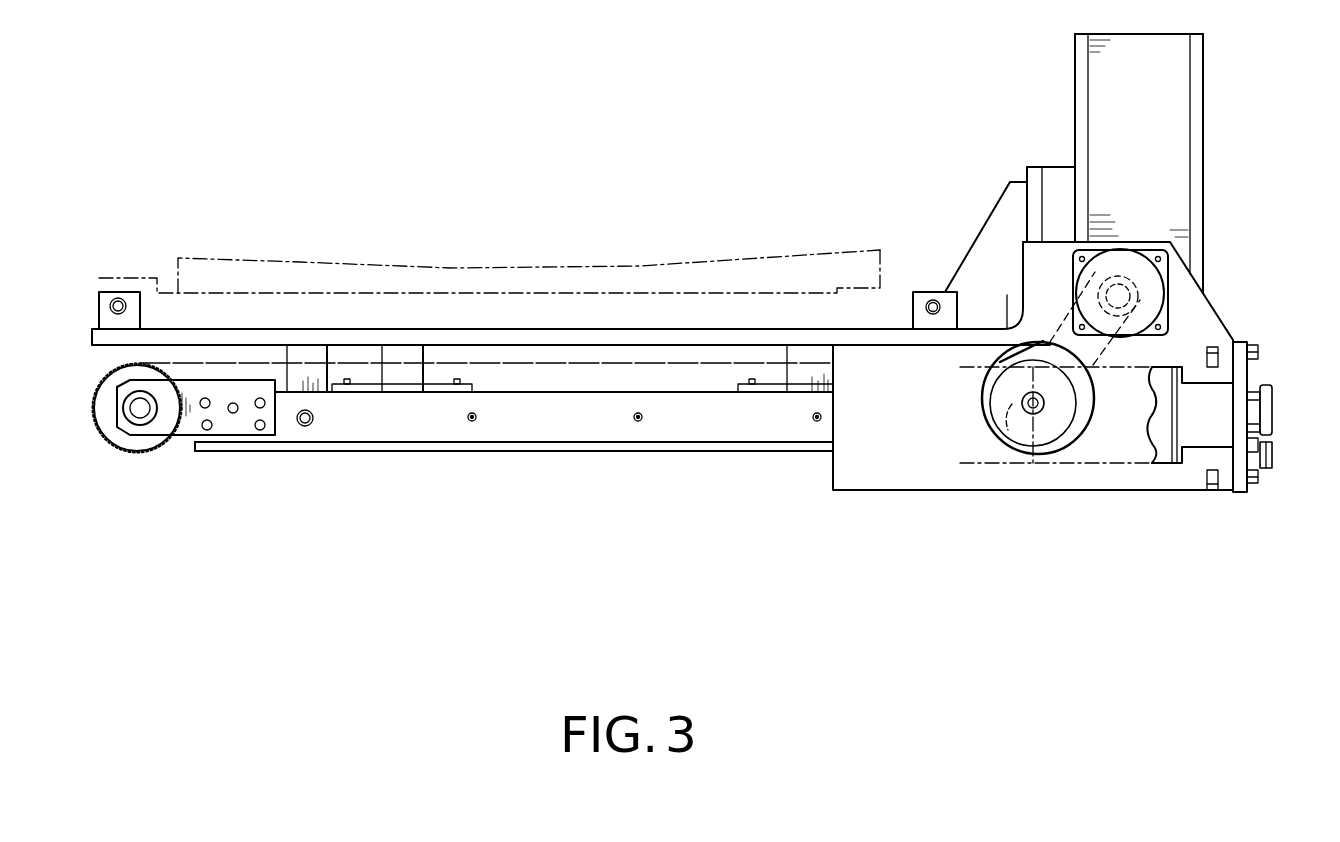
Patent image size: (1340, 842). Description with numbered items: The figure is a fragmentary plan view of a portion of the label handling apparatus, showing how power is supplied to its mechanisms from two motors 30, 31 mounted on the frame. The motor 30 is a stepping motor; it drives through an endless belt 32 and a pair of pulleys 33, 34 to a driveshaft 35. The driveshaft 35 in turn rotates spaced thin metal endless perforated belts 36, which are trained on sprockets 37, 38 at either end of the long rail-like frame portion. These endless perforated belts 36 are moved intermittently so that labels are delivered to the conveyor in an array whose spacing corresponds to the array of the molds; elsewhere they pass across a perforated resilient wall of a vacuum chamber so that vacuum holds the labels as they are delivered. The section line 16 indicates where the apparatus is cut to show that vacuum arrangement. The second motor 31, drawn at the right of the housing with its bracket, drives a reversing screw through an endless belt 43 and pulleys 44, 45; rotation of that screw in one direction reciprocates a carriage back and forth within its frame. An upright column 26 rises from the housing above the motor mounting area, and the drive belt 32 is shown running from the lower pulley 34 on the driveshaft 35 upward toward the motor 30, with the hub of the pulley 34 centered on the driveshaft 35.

The section line 16- 16 is at (614, 385).
The upright column 26 is at (1175, 192).
The motor 30 is at (1150, 290).
The motor 31 is at (1190, 440).
The endless belt 32 is at (1000, 362).
The pulley 33 is at (1063, 300).
The pulley 34 is at (1003, 398).
The driveshaft 35 is at (1020, 410).
The endless perforated belts 36 is at (505, 451).
The sprocket 37 is at (1010, 450).
The sprocket 38 is at (138, 440).
The endless belt 43 is at (1273, 412).
The pulley 44 is at (1267, 382).
The pulley 45 is at (1280, 468).